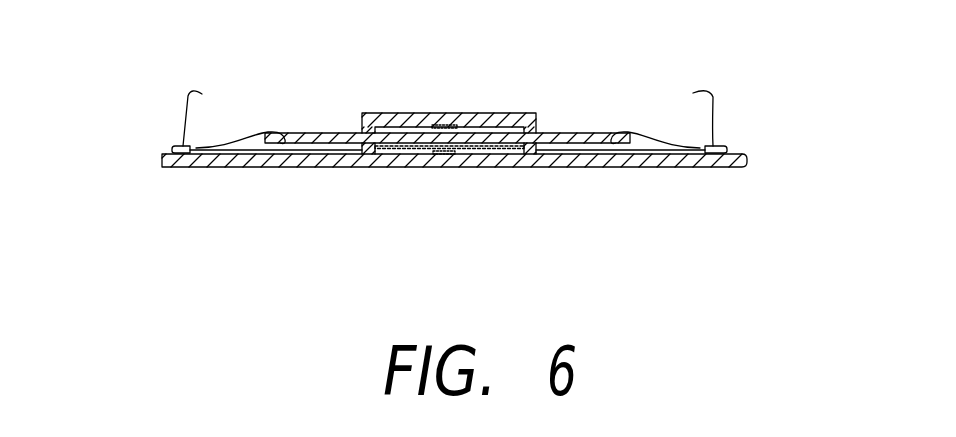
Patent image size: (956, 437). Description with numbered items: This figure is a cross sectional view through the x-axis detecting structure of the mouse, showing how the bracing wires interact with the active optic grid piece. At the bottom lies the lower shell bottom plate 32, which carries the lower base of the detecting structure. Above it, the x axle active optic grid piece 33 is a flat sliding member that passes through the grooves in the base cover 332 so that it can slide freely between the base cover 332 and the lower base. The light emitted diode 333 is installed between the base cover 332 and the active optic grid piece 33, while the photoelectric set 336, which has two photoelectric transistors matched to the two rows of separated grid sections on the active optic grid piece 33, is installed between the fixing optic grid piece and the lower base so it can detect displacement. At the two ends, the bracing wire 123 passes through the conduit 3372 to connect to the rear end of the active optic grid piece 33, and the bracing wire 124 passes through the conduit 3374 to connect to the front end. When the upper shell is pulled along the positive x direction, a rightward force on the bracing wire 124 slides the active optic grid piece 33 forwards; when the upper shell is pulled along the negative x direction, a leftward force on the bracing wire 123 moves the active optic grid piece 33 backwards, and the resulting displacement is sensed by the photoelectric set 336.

The lower shell bottom plate 32 is at (320, 160).
The x axle active optic grid piece 33 is at (317, 135).
The base cover 332 is at (510, 116).
The light emitted diode 333 is at (437, 124).
The photoelectric set 336 is at (447, 154).
The conduit 3372 is at (178, 147).
The conduit 3374 is at (727, 148).
The bracing wire 123 is at (185, 112).
The bracing wire 124 is at (713, 117).